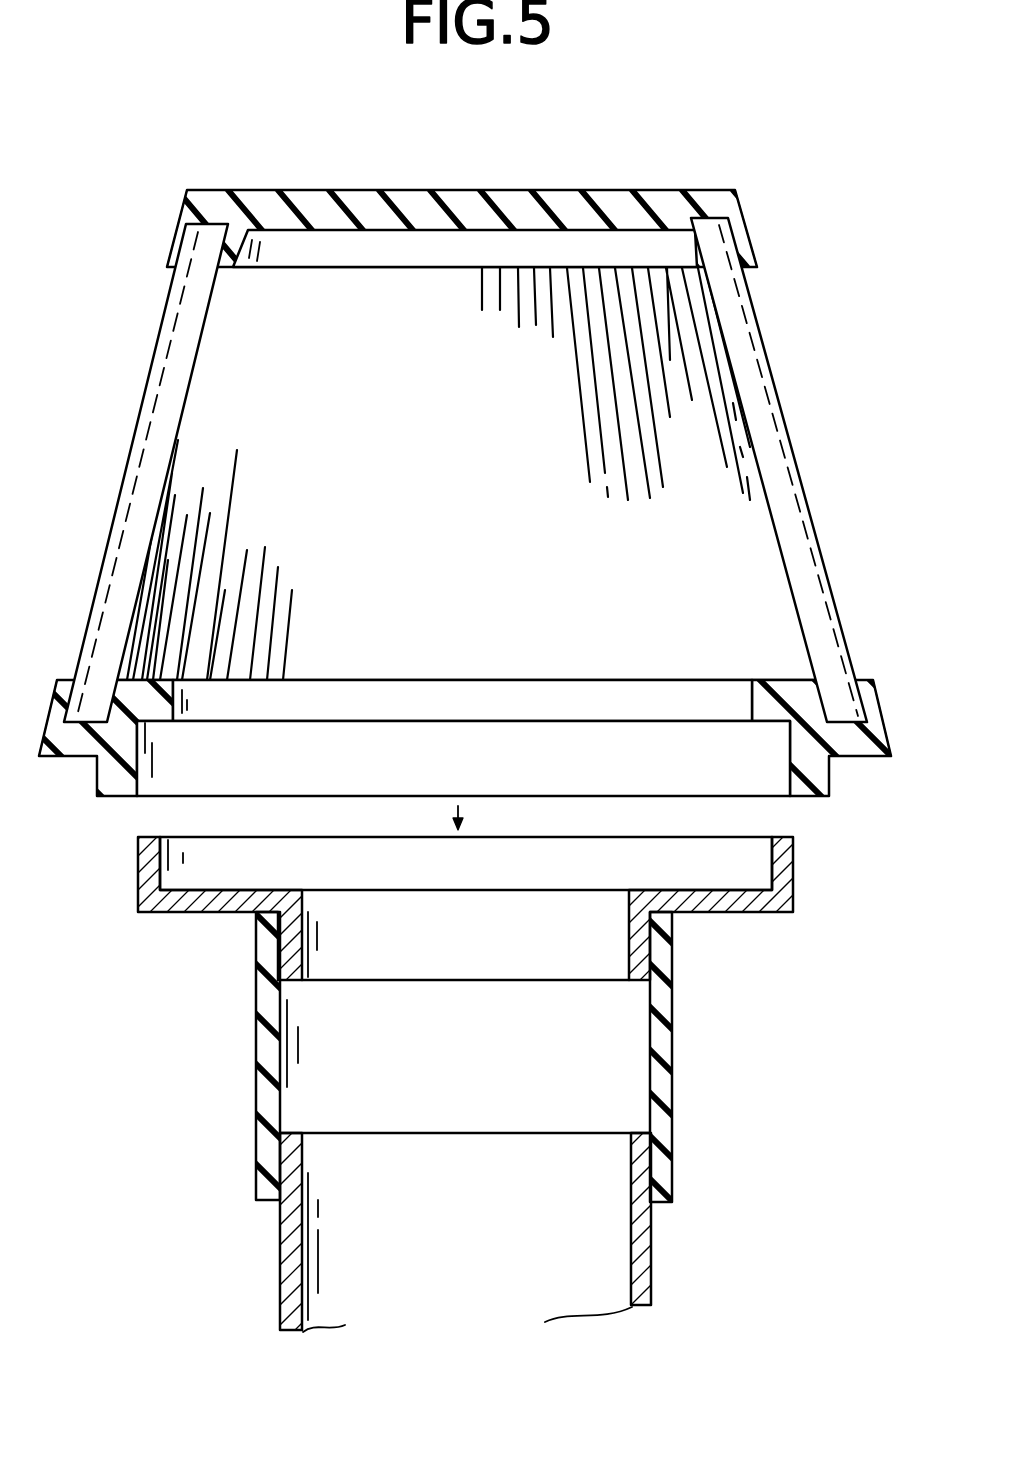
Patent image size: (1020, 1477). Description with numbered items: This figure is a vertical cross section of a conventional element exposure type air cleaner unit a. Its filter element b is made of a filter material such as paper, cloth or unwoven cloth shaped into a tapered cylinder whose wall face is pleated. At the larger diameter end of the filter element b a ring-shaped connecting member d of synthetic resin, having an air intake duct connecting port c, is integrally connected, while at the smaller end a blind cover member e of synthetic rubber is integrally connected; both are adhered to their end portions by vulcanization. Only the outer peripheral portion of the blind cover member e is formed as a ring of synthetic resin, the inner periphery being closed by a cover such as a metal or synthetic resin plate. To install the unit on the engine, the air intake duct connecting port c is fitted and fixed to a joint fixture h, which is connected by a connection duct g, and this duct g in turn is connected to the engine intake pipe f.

The air cleaner unit a is at (139, 272).
The filter element b is at (792, 410).
The air intake duct connecting port c is at (790, 768).
The ring-shaped connecting member d is at (890, 715).
The blind cover member e is at (516, 184).
The engine intake pipe f is at (655, 1244).
The connection duct g is at (675, 1084).
The joint fixture h is at (748, 908).